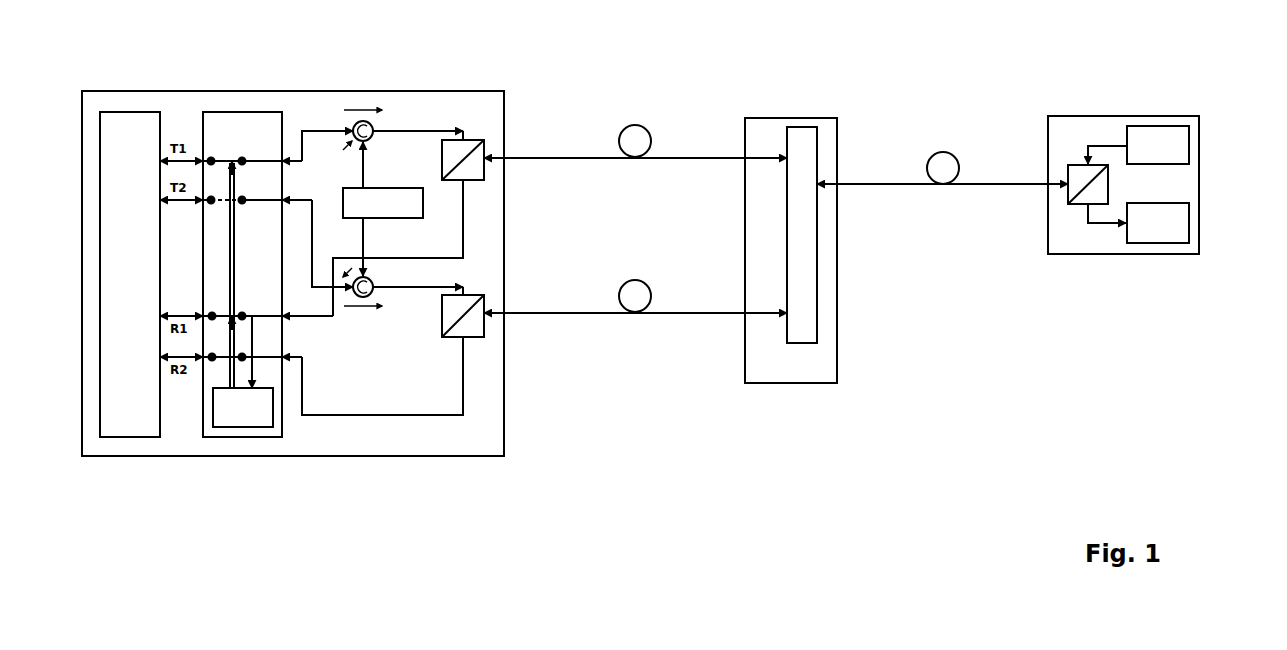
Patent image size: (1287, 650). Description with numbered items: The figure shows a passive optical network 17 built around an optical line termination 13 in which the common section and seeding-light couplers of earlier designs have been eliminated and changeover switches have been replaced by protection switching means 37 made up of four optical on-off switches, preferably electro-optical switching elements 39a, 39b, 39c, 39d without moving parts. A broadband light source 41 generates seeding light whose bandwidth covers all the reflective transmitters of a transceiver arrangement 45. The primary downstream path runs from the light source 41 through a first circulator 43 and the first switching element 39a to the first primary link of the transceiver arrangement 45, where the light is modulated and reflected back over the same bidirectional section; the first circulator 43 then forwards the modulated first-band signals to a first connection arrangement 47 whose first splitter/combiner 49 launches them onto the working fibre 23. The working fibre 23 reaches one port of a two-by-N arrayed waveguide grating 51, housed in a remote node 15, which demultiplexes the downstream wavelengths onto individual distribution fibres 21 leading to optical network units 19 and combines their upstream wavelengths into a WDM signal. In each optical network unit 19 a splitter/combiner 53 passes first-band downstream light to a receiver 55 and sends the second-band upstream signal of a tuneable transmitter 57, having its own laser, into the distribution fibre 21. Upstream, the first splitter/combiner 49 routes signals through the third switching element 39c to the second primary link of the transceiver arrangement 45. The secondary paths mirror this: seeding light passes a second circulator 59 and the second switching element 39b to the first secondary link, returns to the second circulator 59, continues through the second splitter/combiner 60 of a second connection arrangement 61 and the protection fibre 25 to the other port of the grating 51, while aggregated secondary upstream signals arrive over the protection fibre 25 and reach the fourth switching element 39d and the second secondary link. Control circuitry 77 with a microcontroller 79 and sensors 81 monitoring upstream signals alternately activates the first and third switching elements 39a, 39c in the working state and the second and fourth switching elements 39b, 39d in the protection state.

The optical line termination 13 is at (205, 91).
The remote node (RN) 15 is at (778, 118).
The passive optical network system 17 is at (645, 86).
The optical network unit 19 is at (1107, 116).
The distribution fibre 21 is at (960, 183).
The working fibre 23 is at (664, 157).
The protection fibre 25 is at (655, 313).
The protection switching means 37 is at (260, 112).
The first switching element 39a is at (242, 162).
The second switching element 39b is at (252, 205).
The third switching element 39c is at (236, 315).
The fourth switching element 39d is at (222, 358).
The broadband light source 41 is at (373, 187).
The first circulator 43 is at (372, 124).
The transceiver arrangement 45 is at (130, 112).
The first connection arrangement 47 is at (492, 112).
The first splitter/combiner 49 is at (487, 141).
The arrayed waveguide grating 51 is at (808, 320).
The splitter/combiner 53 is at (1110, 184).
The receiver 55 is at (1175, 228).
The transmitter 57 is at (1180, 140).
The second circulator 59 is at (359, 298).
The second splitter/combiner 60 is at (487, 298).
The second connection arrangement 61 is at (492, 272).
The control circuitry 77 is at (222, 490).
The microcontroller 79 is at (260, 420).
The sensors 81 is at (261, 370).